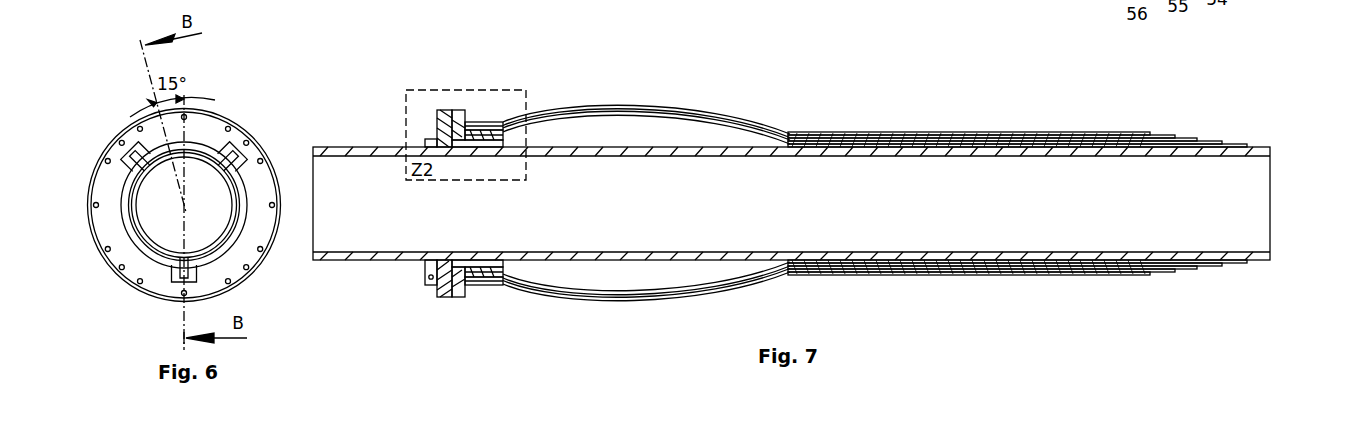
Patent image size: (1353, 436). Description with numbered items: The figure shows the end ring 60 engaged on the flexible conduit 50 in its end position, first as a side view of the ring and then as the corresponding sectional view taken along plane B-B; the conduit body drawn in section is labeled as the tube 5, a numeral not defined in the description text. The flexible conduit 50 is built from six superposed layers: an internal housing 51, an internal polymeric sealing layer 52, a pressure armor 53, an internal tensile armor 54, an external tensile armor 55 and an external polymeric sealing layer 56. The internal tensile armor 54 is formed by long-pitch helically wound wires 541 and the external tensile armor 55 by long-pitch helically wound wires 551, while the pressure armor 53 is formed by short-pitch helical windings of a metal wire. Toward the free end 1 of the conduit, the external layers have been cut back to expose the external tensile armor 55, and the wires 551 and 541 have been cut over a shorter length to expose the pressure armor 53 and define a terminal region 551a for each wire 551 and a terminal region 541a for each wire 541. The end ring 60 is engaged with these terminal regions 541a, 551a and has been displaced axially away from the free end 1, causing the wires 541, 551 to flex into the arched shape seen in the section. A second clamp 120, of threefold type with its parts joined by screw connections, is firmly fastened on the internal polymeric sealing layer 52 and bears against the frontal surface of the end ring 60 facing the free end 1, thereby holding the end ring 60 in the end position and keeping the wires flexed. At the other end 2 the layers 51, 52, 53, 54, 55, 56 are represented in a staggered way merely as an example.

In FIG. 7, the free end 1 is at (323, 130).
In FIG. 7, the other end 2 is at (1242, 135).
In FIG. 7, the tube 5 is at (1262, 260).
In FIG. 7, the flexible conduit 50 is at (877, 95).
In FIG. 6, the internal housing 51 is at (165, 257).
In FIG. 6, the internal polymeric sealing layer 52 is at (137, 237).
In FIG. 7, the internal polymeric sealing layer 52 is at (1243, 263).
In FIG. 7, the pressure armor 53 is at (1215, 266).
In FIG. 7, the internal tensile armor 54 is at (1192, 269).
In FIG. 7, the external tensile armor 55 is at (1167, 272).
In FIG. 7, the external polymeric sealing layer 56 is at (1140, 275).
In FIG. 6, the end ring 60 is at (92, 180).
In FIG. 7, the end ring 60 is at (447, 110).
In FIG. 6, the second clamp 120 is at (122, 221).
In FIG. 7, the second clamp 120 is at (430, 140).
In FIG. 7, the wires of the internal tensile armor 541 is at (600, 115).
In FIG. 7, the terminal region of the internal tensile armor wire 541a is at (502, 122).
In FIG. 7, the wires of the external tensile armor 551 is at (652, 108).
In FIG. 7, the terminal region of the external tensile armor wire 551a is at (473, 122).